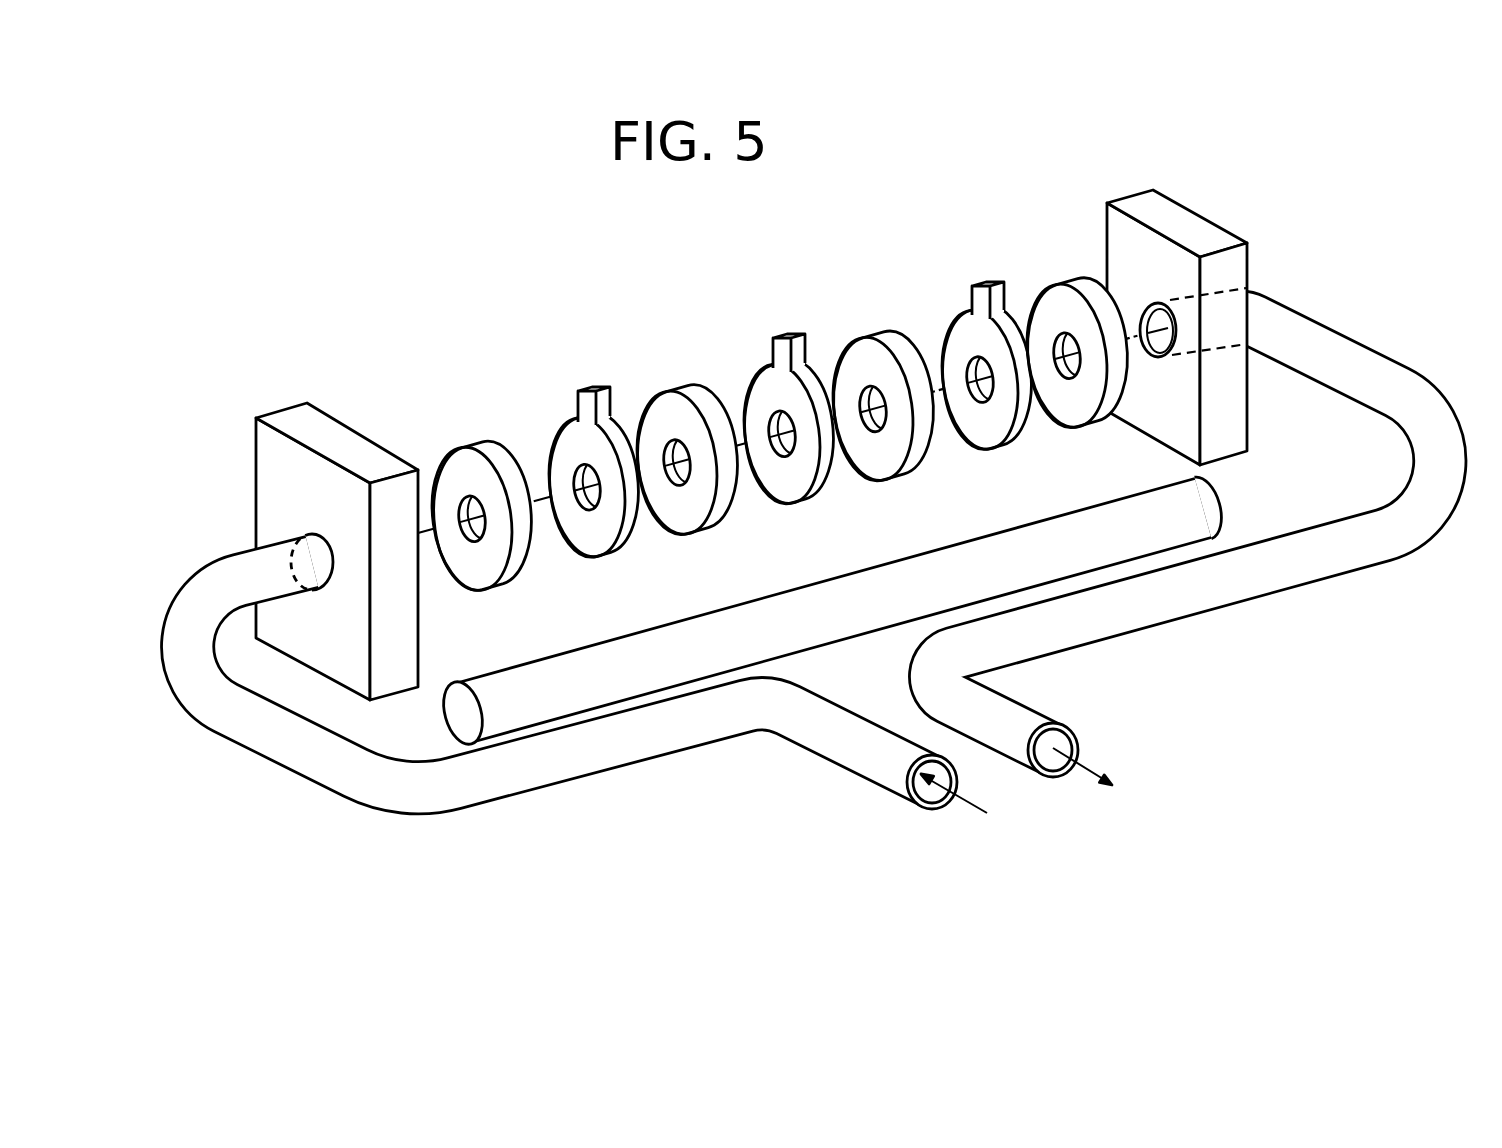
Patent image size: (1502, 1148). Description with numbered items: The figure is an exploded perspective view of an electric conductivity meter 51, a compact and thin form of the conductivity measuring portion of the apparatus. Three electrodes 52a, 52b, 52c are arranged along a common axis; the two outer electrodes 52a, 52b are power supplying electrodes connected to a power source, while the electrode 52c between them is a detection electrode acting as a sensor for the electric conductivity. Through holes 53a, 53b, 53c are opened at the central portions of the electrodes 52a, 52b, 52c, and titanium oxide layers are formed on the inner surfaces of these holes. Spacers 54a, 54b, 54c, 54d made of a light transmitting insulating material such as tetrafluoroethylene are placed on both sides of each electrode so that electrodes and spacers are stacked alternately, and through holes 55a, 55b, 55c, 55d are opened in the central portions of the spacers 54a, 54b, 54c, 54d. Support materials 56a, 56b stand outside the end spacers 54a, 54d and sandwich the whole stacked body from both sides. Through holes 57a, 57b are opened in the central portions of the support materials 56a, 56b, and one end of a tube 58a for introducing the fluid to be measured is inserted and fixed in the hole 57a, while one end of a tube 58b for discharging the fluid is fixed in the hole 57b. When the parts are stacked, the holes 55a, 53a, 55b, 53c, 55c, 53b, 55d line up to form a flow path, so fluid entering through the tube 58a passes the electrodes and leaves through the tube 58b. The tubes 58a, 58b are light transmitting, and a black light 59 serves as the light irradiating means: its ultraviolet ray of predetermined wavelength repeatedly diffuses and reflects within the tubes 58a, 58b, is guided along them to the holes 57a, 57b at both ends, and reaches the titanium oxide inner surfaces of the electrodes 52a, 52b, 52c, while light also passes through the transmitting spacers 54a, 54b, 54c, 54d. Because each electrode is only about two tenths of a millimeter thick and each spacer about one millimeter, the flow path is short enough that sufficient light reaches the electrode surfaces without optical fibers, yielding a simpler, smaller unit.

The electric conductivity meter 51 is at (1020, 270).
The electrode 52a is at (588, 392).
The electrode 52b is at (978, 286).
The electrode 52c is at (776, 336).
The through hole 53a is at (585, 512).
The through hole 53b is at (981, 401).
The through hole 53c is at (782, 457).
The spacer 54a is at (475, 447).
The spacer 54b is at (676, 392).
The spacer 54c is at (878, 336).
The spacer 54d is at (1069, 284).
The through hole 55a is at (470, 545).
The through hole 55b is at (680, 487).
The through hole 55c is at (875, 430).
The through hole 55d is at (1064, 378).
The support material 56a is at (284, 410).
The support material 56b is at (1139, 190).
The through hole 57a is at (310, 537).
The through hole 57b is at (1143, 306).
The tube 58a is at (470, 800).
The tube 58b is at (1404, 396).
The black light 59 is at (1196, 510).